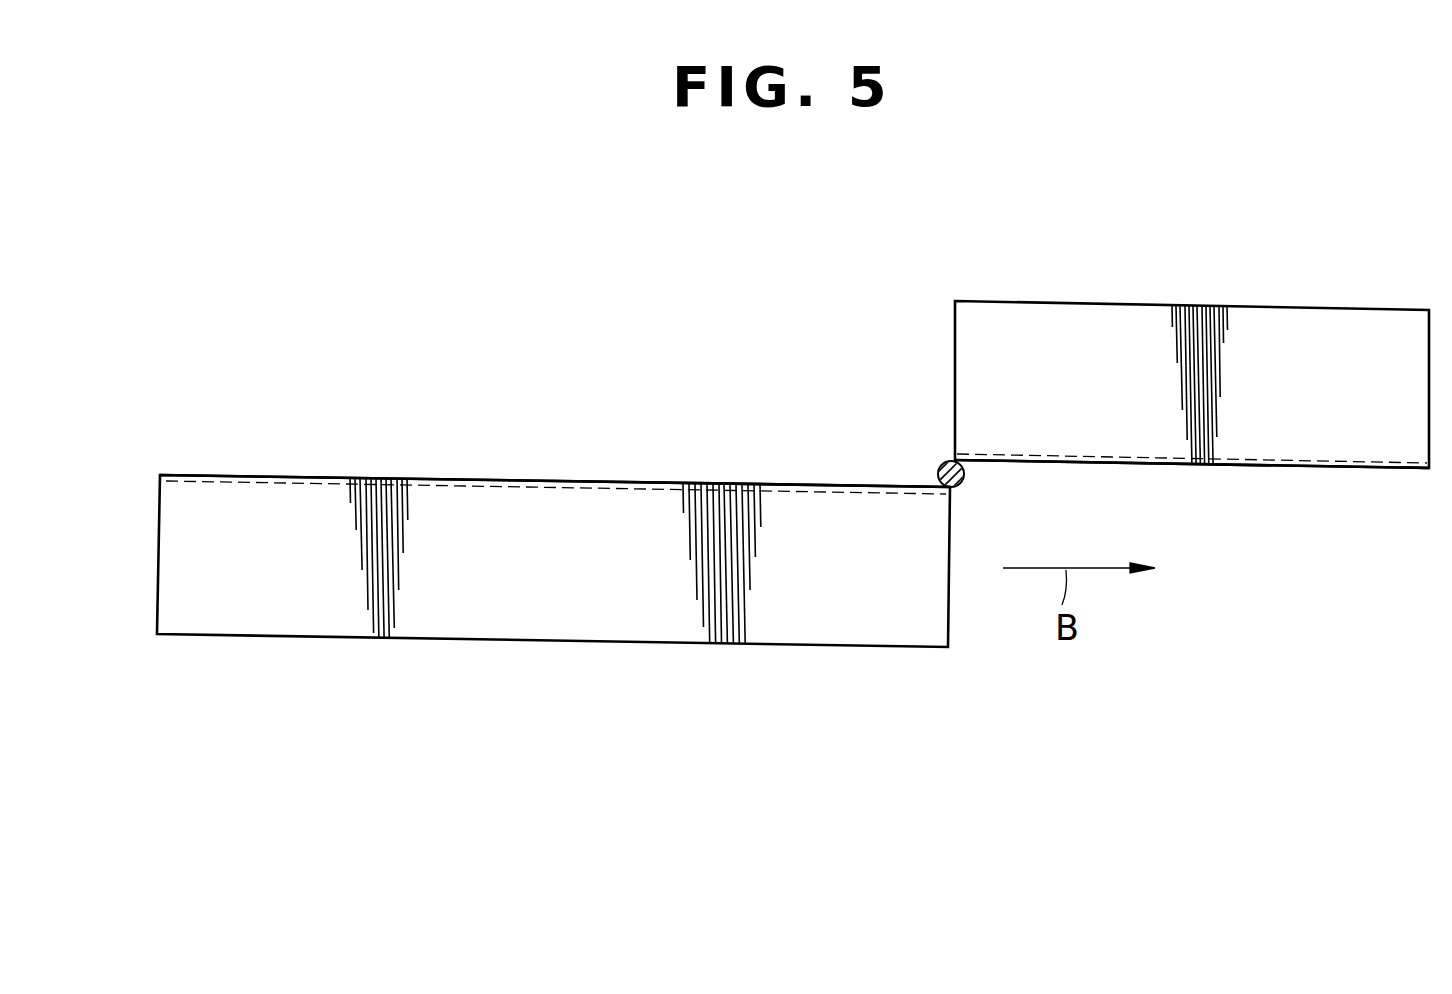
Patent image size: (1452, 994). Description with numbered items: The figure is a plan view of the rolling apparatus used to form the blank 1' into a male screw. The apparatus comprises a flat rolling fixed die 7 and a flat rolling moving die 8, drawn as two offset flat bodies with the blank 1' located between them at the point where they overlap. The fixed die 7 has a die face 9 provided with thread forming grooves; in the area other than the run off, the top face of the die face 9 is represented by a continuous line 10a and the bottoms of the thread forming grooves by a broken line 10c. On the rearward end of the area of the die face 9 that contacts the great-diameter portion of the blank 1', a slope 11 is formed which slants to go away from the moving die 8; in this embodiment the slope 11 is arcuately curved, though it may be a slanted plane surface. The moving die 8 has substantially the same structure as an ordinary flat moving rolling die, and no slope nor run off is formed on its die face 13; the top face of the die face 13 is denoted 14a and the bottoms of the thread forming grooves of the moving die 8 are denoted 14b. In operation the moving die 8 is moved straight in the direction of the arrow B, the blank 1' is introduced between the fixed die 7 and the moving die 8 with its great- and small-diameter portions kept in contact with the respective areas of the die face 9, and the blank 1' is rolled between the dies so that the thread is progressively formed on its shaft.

The blank 1' is at (929, 433).
The flat rolling fixed die 7 is at (1283, 320).
The flat rolling moving die 8 is at (509, 625).
The die face 9 is at (1081, 465).
The continuous line representing top face of die face 10a is at (1205, 465).
The broken line representing bottoms of thread forming grooves 10c is at (1328, 468).
The slope 11 is at (1420, 470).
The die face 13 is at (363, 478).
The top face of die face 14a is at (530, 478).
The bottoms of thread forming grooves 14b is at (705, 483).